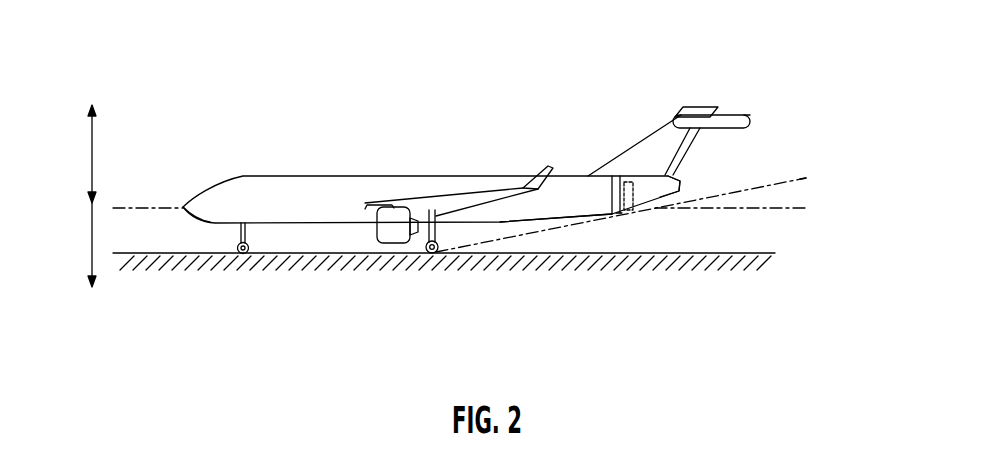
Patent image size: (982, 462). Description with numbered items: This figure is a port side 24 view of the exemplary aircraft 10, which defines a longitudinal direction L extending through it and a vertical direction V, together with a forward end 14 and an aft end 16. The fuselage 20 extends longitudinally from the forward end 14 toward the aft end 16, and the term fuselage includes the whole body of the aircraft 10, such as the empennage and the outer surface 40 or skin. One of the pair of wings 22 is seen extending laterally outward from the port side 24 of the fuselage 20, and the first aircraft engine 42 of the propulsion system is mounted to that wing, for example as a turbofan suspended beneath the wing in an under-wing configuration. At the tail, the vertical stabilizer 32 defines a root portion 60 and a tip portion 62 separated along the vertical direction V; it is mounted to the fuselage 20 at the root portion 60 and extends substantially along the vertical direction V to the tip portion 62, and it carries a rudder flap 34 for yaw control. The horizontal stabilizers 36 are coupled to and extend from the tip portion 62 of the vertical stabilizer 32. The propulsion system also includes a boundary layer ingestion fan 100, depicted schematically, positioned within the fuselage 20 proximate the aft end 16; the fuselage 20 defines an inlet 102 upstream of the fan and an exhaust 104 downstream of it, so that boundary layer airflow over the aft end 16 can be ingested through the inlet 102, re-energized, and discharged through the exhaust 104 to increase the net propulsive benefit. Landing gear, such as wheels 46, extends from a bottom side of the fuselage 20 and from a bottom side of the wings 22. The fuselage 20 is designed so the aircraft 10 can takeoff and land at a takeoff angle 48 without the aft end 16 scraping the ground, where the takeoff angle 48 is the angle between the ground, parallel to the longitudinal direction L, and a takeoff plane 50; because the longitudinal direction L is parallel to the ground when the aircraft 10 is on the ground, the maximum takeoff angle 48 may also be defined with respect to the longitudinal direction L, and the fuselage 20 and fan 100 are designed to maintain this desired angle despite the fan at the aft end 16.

The aircraft 10 is at (502, 189).
The forward end 14 is at (184, 224).
The aft end 16 is at (738, 180).
The fuselage 20 is at (257, 216).
The wings 22 is at (492, 189).
The port side 24 is at (517, 224).
The vertical stabilizer 32 is at (673, 105).
The rudder flap 34 is at (752, 98).
The horizontal stabilizers 36 is at (750, 115).
The outer surface 40 is at (398, 221).
The first aircraft engine 42 is at (381, 251).
The wheels 46 is at (411, 256).
The takeoff angle 48 is at (808, 187).
The takeoff plane 50 is at (543, 238).
The root portion 60 is at (666, 210).
The tip portion 62 is at (706, 92).
The boundary layer ingestion fan 100 is at (636, 226).
The inlet 102 is at (604, 221).
The exhaust 104 is at (692, 171).
The longitudinal direction L is at (138, 200).
The vertical direction V is at (92, 196).